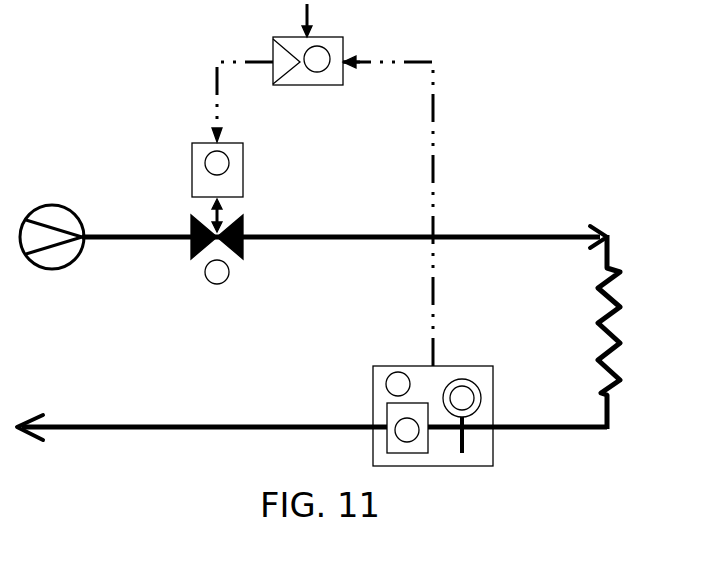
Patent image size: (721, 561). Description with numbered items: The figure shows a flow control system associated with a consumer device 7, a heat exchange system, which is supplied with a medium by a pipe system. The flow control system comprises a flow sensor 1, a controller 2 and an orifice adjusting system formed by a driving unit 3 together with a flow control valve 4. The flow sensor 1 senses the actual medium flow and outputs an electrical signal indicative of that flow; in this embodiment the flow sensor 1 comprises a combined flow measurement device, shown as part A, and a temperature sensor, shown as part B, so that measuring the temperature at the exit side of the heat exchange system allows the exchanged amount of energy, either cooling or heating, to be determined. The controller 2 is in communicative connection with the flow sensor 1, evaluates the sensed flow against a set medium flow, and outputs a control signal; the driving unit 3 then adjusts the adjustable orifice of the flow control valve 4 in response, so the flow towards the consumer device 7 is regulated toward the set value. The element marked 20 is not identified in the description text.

The pump 20 is at (52, 237).
The controller 2 is at (308, 61).
The driving unit 3 is at (217, 170).
The flow control valve 4 is at (217, 249).
The flow sensor 1 is at (433, 416).
The consumer device 7 is at (613, 317).